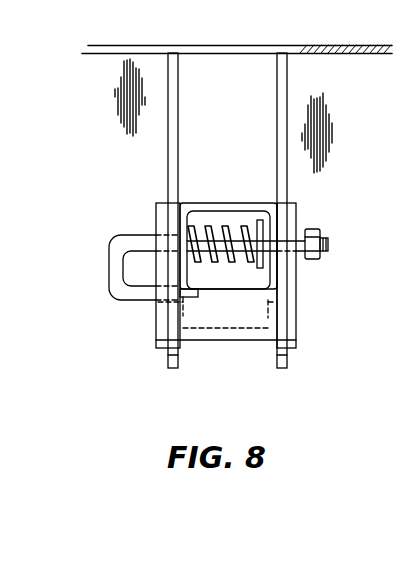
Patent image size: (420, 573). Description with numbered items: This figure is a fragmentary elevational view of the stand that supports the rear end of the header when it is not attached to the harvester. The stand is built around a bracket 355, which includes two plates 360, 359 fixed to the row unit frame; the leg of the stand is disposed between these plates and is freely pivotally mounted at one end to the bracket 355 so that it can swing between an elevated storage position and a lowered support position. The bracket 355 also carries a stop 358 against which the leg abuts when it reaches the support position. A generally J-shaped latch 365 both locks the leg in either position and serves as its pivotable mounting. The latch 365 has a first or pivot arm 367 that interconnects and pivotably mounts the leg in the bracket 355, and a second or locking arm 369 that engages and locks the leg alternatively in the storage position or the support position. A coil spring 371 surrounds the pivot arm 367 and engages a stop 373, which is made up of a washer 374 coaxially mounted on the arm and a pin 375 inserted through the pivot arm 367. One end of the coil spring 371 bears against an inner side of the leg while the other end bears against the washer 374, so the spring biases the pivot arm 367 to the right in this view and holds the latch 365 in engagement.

The bracket 355 is at (340, 146).
The stop 358 is at (240, 321).
The plate 359 is at (180, 85).
The plate 360 is at (288, 83).
The latch 365 is at (92, 263).
The pivot arm 367 is at (300, 252).
The locking arm 369 is at (147, 299).
The coil spring 371 is at (228, 237).
The stop 373 is at (256, 269).
The washer 374 is at (259, 222).
The pin 375 is at (263, 243).